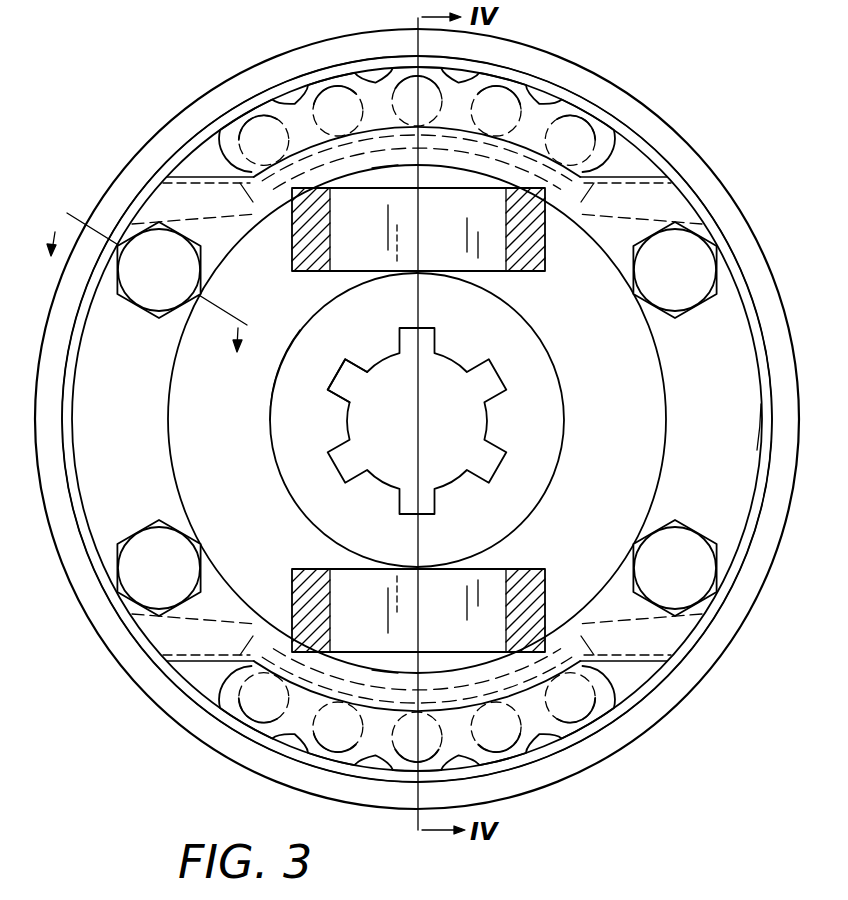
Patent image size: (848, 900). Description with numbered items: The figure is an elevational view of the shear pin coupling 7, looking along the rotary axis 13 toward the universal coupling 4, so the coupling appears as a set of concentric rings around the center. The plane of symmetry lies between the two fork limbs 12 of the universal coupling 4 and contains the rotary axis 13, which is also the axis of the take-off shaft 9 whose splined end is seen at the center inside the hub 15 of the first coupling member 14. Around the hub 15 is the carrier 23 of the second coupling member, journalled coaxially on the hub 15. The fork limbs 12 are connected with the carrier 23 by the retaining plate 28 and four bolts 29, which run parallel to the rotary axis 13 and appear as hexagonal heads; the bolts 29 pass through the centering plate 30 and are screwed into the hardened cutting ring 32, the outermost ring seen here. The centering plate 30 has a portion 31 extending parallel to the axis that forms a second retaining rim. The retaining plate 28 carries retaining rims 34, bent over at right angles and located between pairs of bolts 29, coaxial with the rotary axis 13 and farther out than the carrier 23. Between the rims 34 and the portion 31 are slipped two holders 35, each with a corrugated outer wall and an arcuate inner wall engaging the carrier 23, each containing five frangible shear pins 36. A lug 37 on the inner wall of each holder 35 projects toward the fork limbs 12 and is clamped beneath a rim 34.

The universal coupling 4 is at (526, 275).
The shear pin coupling 7 is at (701, 190).
The take-off shaft 9 is at (390, 367).
The fork limbs 12 is at (312, 272).
The rotary axis 13 is at (417, 422).
The first coupling member 14 is at (115, 667).
The hub 15 is at (532, 462).
The carrier 23 is at (247, 473).
The retaining plate 28 is at (684, 378).
The bolts 29 is at (130, 300).
The centering plate 30 is at (762, 467).
The portion of the centering plate 31 is at (764, 408).
The cutting ring 32 is at (247, 75).
The retaining rims 34 is at (461, 132).
The holders 35 is at (541, 117).
The shear pins 36 is at (313, 60).
The lug 37 is at (385, 162).